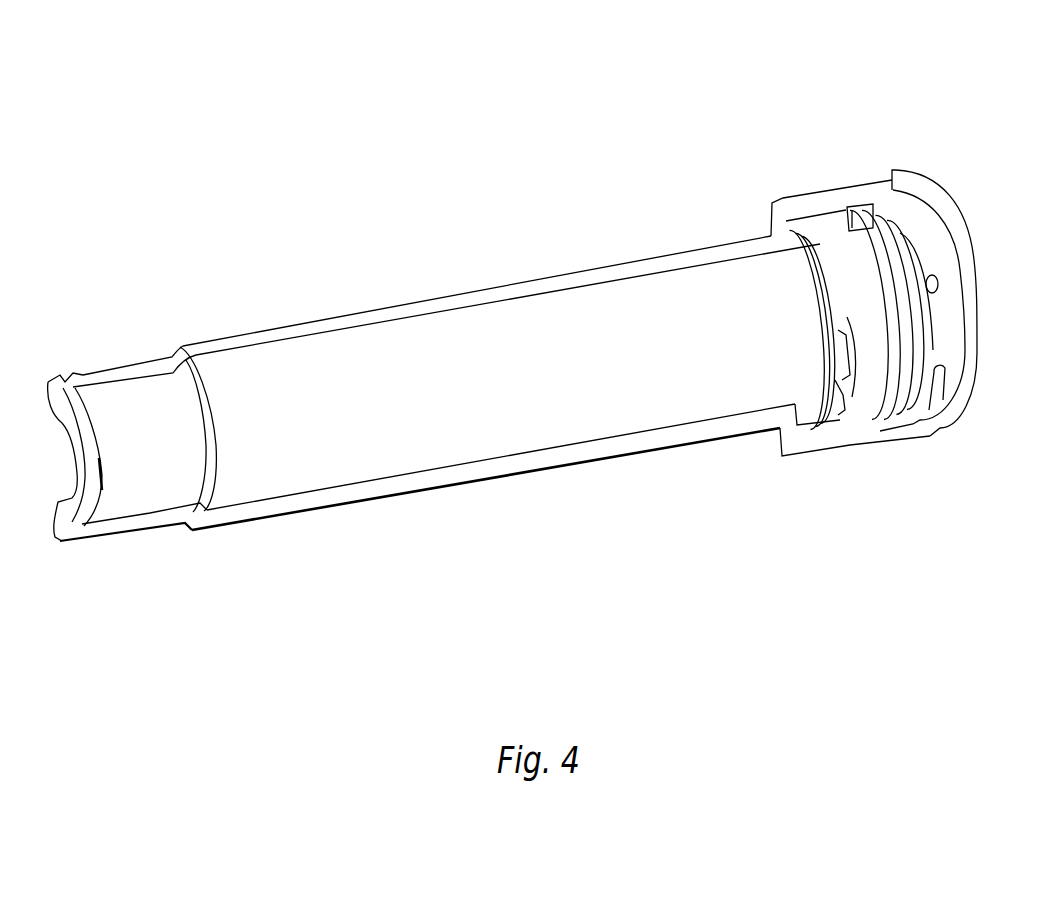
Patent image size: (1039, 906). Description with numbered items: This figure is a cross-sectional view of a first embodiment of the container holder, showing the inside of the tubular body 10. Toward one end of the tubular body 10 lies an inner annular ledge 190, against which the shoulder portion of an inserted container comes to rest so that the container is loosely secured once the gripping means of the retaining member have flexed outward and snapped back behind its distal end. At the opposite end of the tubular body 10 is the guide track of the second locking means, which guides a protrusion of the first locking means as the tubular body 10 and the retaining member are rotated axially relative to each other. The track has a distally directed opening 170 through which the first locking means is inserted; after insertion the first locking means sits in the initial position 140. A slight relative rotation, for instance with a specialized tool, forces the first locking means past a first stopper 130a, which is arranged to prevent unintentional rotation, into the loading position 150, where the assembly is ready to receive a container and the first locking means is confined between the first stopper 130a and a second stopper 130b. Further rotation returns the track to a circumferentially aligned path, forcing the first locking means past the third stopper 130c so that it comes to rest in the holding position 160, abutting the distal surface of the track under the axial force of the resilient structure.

The tubular body 10 is at (356, 434).
The inner annular ledge 190 is at (198, 360).
The initial position 140 is at (865, 270).
The loading position 150 is at (860, 291).
The first stopper 130a is at (855, 269).
The second stopper 130b is at (852, 313).
The third stopper 130c is at (848, 372).
The holding position 160 is at (843, 367).
The distally directed opening 170 is at (869, 245).